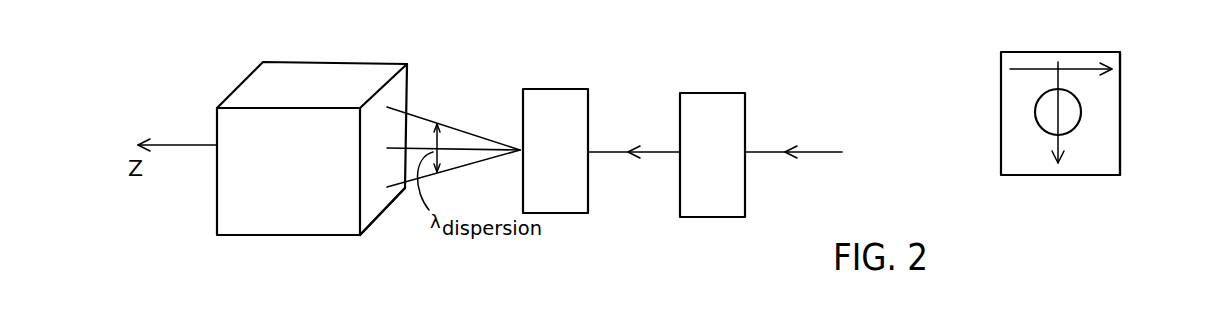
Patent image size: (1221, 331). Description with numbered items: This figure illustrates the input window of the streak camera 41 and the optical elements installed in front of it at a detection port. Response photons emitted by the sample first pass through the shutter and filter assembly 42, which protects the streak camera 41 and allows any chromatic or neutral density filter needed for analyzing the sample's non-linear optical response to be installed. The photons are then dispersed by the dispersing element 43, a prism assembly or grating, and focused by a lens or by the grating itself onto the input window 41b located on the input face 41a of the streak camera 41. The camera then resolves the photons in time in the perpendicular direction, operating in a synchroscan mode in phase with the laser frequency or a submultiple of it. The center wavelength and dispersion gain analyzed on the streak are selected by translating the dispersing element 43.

The streak camera 41 is at (288, 235).
The input face 41a is at (376, 194).
The input window 41b is at (1035, 111).
The shutter and filter assembly 42 is at (745, 187).
The dispersing element 43 is at (588, 185).